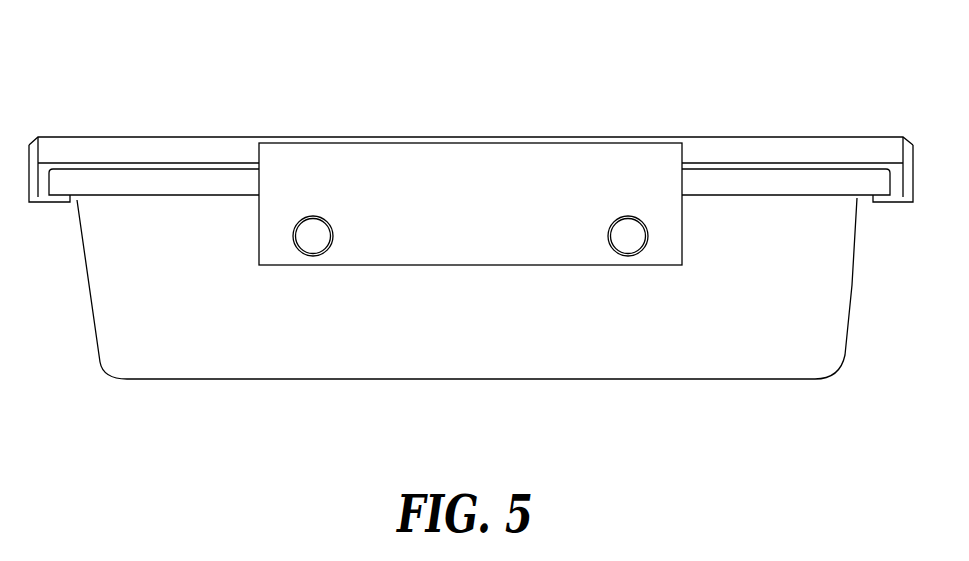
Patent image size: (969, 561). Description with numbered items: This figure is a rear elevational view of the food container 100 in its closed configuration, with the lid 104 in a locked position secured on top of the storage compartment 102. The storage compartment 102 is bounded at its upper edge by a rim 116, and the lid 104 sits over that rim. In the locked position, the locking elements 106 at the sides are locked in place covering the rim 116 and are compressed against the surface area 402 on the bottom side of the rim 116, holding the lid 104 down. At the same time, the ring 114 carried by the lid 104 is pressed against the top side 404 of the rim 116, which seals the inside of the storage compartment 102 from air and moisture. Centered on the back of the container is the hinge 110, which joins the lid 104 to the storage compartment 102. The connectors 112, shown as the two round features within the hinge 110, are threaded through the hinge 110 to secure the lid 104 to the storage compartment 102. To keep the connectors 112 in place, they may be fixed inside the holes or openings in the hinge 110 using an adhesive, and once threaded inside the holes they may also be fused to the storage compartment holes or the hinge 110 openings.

The food container 100 is at (838, 90).
The storage compartment 102 is at (757, 342).
The lid 104 is at (769, 152).
The locking elements 106 is at (38, 180).
The hinge 110 is at (421, 191).
The connectors 112 is at (625, 236).
The ring 114 is at (737, 169).
The rim 116 is at (157, 180).
The surface area 402 is at (857, 196).
The top side 404 is at (880, 173).